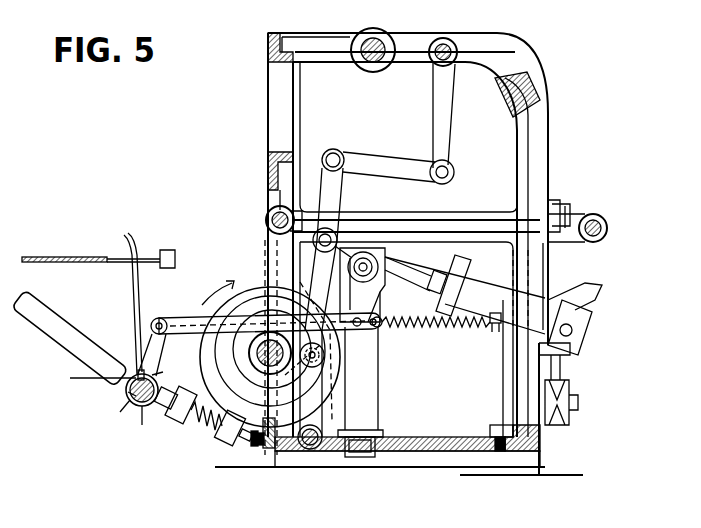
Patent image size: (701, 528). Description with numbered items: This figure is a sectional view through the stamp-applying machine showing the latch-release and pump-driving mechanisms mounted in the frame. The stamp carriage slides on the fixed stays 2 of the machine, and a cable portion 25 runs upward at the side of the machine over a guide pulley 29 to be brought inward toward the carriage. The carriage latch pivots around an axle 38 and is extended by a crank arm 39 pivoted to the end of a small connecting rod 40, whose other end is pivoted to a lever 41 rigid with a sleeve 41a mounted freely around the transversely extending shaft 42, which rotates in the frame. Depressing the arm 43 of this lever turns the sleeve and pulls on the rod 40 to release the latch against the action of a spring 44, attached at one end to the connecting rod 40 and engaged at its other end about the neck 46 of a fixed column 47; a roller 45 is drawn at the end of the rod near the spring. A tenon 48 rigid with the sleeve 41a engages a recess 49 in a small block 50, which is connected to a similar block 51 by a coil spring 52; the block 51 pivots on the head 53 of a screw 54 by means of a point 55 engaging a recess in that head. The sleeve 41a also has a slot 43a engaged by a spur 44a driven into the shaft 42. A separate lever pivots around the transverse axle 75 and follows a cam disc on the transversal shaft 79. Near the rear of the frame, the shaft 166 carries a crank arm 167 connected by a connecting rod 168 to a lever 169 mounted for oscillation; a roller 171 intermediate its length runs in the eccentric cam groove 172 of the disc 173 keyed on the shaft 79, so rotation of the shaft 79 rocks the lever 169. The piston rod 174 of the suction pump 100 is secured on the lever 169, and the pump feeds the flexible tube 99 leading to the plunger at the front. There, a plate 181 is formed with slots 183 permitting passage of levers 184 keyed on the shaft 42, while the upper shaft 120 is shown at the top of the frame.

The fixed stays 2 is at (268, 218).
The cable portion 25 is at (550, 262).
The guide pulley 29 is at (558, 200).
The axle 38 is at (380, 282).
The crank arm 39 is at (368, 298).
The connecting rod 40 is at (182, 320).
The lever 41 is at (155, 350).
The sleeve 41a is at (130, 400).
The shaft 42 is at (142, 410).
The arm 43 is at (50, 314).
The slot 43a is at (128, 392).
The spring 44 is at (430, 332).
The spur 44a is at (93, 371).
The roller 45 is at (382, 328).
The neck 46 is at (490, 332).
The fixed column 47 is at (500, 385).
The tenon 48 is at (163, 337).
The recess 49 is at (170, 395).
The block 50 is at (180, 418).
The block 51 is at (226, 441).
The coil spring 52 is at (206, 430).
The head 53 is at (255, 447).
The screw 54 is at (272, 450).
The point 55 is at (246, 440).
The axle 75 is at (312, 449).
The shaft 79 is at (318, 372).
The flexible tube 99 is at (584, 312).
The suction pump 100 is at (465, 294).
The shaft 120 is at (373, 40).
The shaft 166 is at (447, 40).
The crank arm 167 is at (440, 94).
The connecting rod 168 is at (402, 164).
The lever 169 is at (335, 185).
The roller 171 is at (325, 357).
The cam groove 172 is at (300, 395).
The disc 173 is at (243, 285).
The piston rod 174 is at (415, 276).
The plate 181 is at (92, 263).
The slot 183 is at (120, 262).
The lever 184 is at (132, 248).